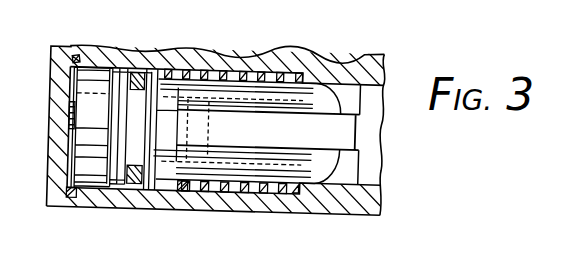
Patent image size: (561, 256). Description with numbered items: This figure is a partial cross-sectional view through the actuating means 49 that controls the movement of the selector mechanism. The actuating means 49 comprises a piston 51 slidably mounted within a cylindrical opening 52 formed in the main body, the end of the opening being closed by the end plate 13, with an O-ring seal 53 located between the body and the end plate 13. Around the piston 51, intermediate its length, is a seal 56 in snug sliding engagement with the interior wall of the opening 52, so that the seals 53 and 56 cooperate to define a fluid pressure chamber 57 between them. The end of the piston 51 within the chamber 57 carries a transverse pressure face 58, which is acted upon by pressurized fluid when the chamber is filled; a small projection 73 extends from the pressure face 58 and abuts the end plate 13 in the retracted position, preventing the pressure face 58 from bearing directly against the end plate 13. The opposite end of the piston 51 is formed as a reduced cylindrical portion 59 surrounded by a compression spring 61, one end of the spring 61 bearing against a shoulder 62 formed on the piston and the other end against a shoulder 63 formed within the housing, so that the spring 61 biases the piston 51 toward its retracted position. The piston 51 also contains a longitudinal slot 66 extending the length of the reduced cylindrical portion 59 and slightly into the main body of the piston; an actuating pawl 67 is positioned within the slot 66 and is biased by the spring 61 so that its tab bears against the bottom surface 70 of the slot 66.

The end plate 13 is at (68, 46).
The actuating means 49 is at (228, 203).
The piston 51 is at (129, 72).
The cylindrical opening 52 is at (252, 72).
The O-ring seal 53 is at (76, 55).
The seal 56 is at (136, 189).
The fluid pressure chamber 57 is at (97, 66).
The pressure face 58 is at (72, 161).
The reduced cylindrical portion 59 is at (318, 85).
The compression spring 61 is at (281, 72).
The shoulder 62 is at (184, 191).
The shoulder 63 is at (298, 189).
The longitudinal slot 66 is at (267, 151).
The actuating pawl 67 is at (347, 128).
The bottom surface 70 is at (153, 122).
The projection 73 is at (70, 115).